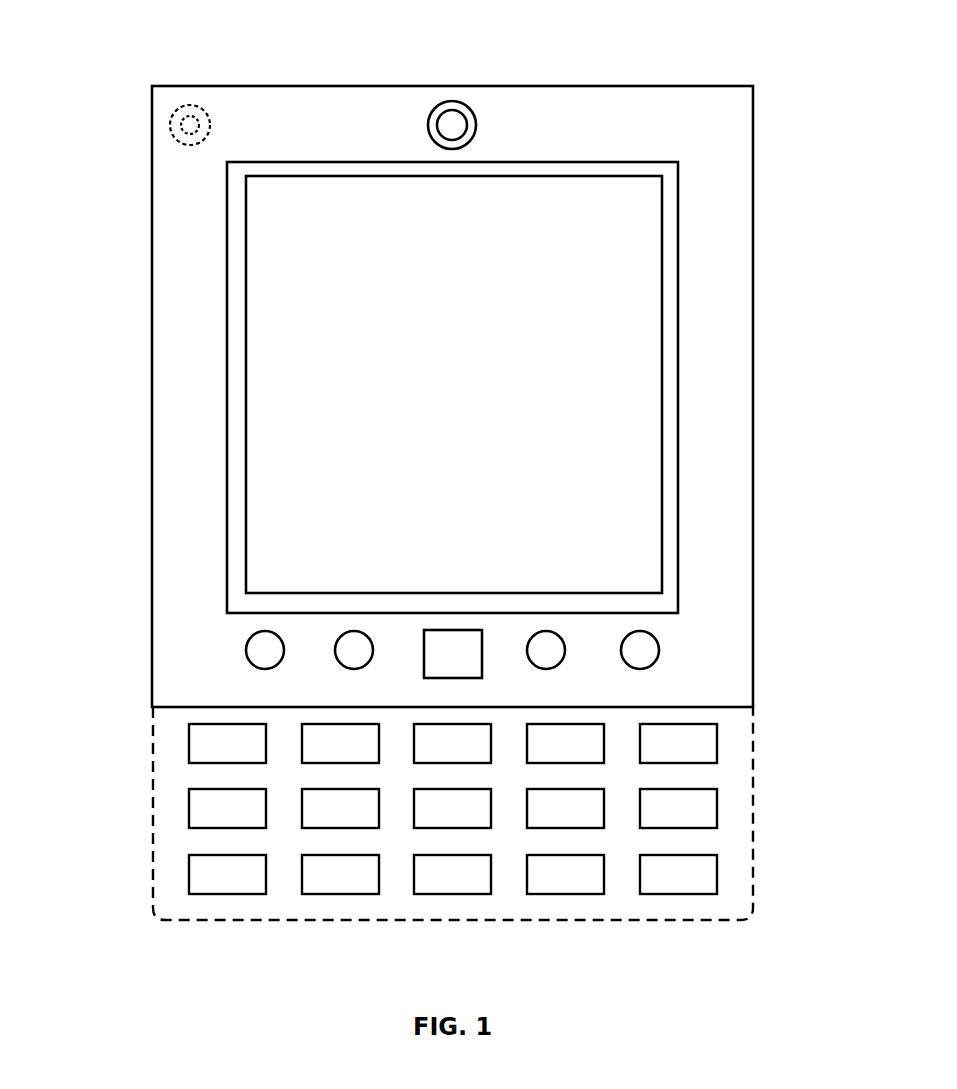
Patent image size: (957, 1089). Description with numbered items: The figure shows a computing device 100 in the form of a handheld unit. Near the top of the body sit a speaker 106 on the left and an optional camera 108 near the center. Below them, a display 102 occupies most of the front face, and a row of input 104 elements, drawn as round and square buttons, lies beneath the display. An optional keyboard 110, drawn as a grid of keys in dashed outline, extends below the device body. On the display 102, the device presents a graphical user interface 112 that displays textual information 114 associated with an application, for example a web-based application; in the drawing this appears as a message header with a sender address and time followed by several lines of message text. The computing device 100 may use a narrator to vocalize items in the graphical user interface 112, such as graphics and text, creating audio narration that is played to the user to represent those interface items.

The computing device 100 is at (753, 199).
The display 102 is at (678, 361).
The input 104 is at (660, 650).
The speaker 106 is at (170, 125).
The camera 108 is at (452, 101).
The keyboard 110 is at (755, 846).
The graphical user interface 112 is at (246, 203).
The textual information 114 is at (285, 307).